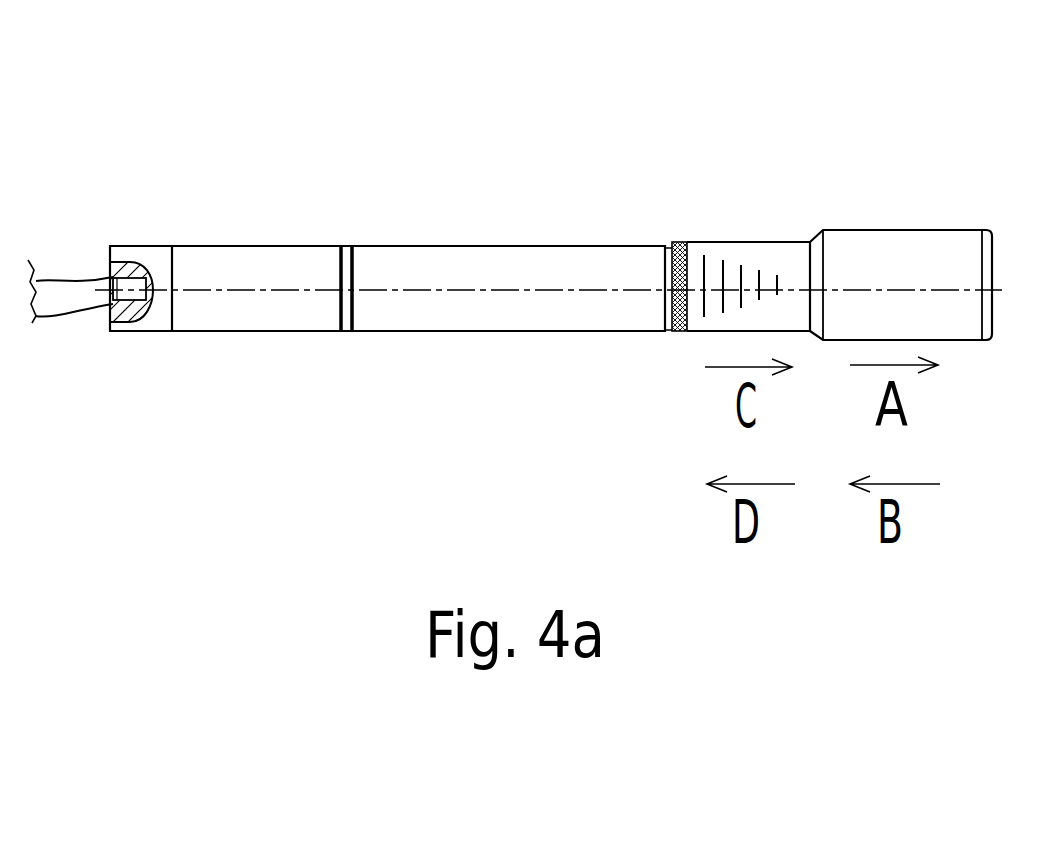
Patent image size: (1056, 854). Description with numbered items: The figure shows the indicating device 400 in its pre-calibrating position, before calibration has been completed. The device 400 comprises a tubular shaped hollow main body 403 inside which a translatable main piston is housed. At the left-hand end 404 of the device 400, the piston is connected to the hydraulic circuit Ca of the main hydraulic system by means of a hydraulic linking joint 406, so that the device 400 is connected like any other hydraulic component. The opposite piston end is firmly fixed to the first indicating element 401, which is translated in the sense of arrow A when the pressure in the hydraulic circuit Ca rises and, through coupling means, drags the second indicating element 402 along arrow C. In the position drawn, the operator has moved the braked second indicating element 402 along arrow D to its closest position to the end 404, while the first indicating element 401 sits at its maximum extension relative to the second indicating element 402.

The indicating device 400 is at (475, 357).
The first indicating element 401 is at (902, 253).
The second indicating element 402 is at (738, 258).
The tubular shaped hollow main body 403 is at (488, 269).
The end of the device 404 is at (252, 270).
The hydraulic linking joint 406 is at (132, 293).
The hydraulic circuit Ca is at (92, 290).